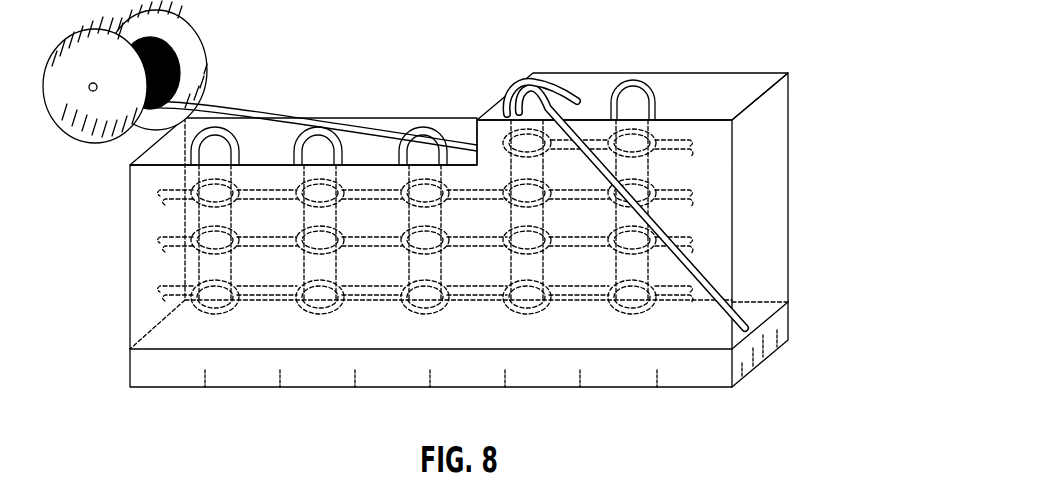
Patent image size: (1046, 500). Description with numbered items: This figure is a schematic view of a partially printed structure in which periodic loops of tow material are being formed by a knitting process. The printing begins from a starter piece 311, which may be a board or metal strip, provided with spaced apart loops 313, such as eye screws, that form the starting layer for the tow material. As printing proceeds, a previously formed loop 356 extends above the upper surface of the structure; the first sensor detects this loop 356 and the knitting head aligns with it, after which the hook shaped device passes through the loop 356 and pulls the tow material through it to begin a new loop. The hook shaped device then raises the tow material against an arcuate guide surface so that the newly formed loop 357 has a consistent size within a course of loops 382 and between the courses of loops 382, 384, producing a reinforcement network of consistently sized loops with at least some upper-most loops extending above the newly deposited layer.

The starter piece 311 is at (697, 370).
The spaced apart loops 313 is at (650, 310).
The previously formed loop 356 is at (503, 140).
The newly formed loop 357 is at (534, 84).
The course of loops 382 is at (653, 142).
The course of loops 384 is at (653, 188).